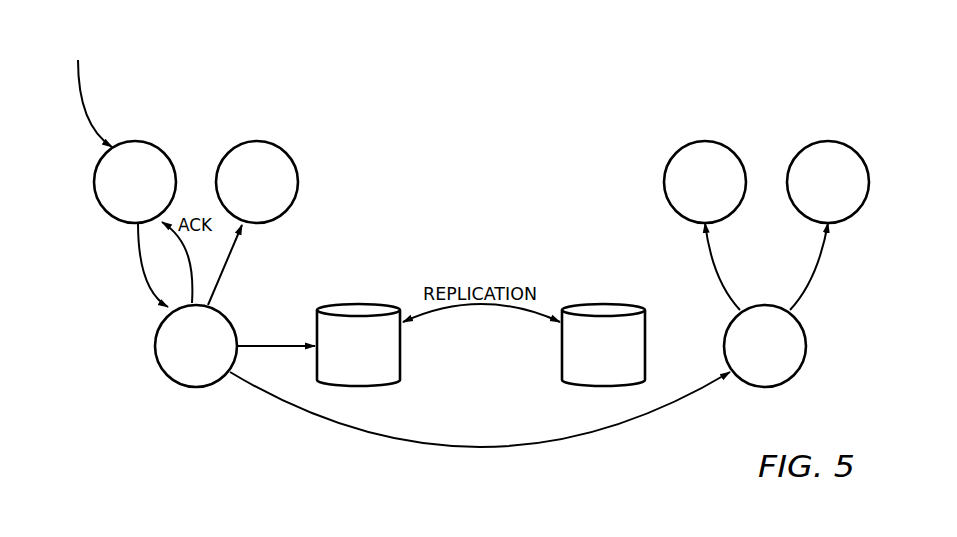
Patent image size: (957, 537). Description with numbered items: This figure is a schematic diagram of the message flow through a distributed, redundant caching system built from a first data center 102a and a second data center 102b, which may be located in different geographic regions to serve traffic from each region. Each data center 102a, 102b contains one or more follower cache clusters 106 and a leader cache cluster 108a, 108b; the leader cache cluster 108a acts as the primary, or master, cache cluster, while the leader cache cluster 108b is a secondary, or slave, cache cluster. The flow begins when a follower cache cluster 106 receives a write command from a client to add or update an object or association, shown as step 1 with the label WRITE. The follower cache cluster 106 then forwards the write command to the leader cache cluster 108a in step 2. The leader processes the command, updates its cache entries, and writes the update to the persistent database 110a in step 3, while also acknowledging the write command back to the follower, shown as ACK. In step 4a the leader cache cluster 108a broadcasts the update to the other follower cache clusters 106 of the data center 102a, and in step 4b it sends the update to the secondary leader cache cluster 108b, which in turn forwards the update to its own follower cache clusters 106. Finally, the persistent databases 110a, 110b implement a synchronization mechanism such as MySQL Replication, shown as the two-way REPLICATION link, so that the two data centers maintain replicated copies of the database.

The follower cache cluster 106 is at (137, 141).
The leader cache cluster 108a is at (155, 344).
The leader cache cluster 108b is at (807, 345).
The persistent database 110a is at (358, 309).
The persistent database 110b is at (603, 309).
The first data center 102a is at (258, 424).
The second data center 102b is at (703, 424).
The write command receipt step 1 is at (82, 92).
The write command forwarding step 2 is at (150, 265).
The database write step 3 is at (276, 334).
The local update broadcast step 4a is at (228, 265).
The remote update broadcast step 4b is at (533, 335).